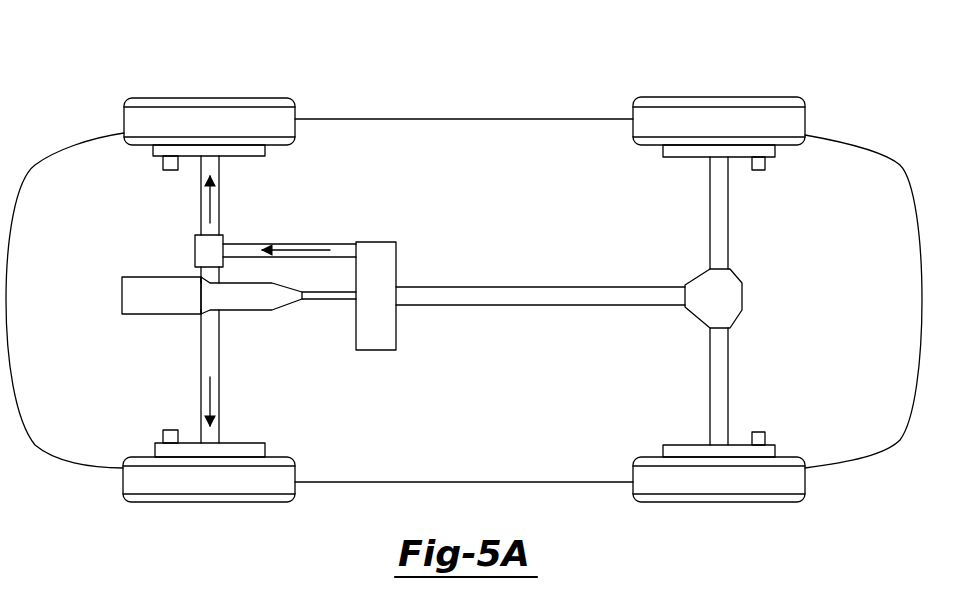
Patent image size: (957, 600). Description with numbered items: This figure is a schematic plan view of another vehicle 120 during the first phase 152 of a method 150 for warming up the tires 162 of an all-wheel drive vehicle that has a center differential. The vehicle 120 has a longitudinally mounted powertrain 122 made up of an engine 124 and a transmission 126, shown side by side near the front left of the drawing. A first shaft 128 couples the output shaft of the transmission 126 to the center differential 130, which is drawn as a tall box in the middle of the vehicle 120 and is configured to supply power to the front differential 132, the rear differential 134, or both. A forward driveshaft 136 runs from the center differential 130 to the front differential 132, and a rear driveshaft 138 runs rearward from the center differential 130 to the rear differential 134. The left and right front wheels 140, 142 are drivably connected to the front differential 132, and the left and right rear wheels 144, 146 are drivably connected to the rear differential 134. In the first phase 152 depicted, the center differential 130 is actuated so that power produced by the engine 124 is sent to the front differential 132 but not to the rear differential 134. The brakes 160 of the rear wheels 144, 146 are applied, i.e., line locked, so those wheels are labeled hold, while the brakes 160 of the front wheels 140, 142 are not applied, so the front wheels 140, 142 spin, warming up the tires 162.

The vehicle 120 is at (464, 119).
The powertrain 122 is at (166, 342).
The engine 124 is at (122, 296).
The transmission 126 is at (258, 312).
The first shaft 128 is at (322, 300).
The center differential 130 is at (375, 350).
The front differential 132 is at (225, 240).
The rear differential 134 is at (723, 298).
The forward driveshaft 136 is at (292, 243).
The rear driveshaft 138 is at (594, 306).
The left front wheel 140 is at (160, 485).
The right front wheel 142 is at (210, 107).
The left rear wheel 144 is at (770, 485).
The right rear wheel 146 is at (768, 118).
The method 150 is at (885, 34).
The first phase 152 is at (537, 72).
The brakes 160 is at (777, 148).
The tires 162 is at (160, 117).